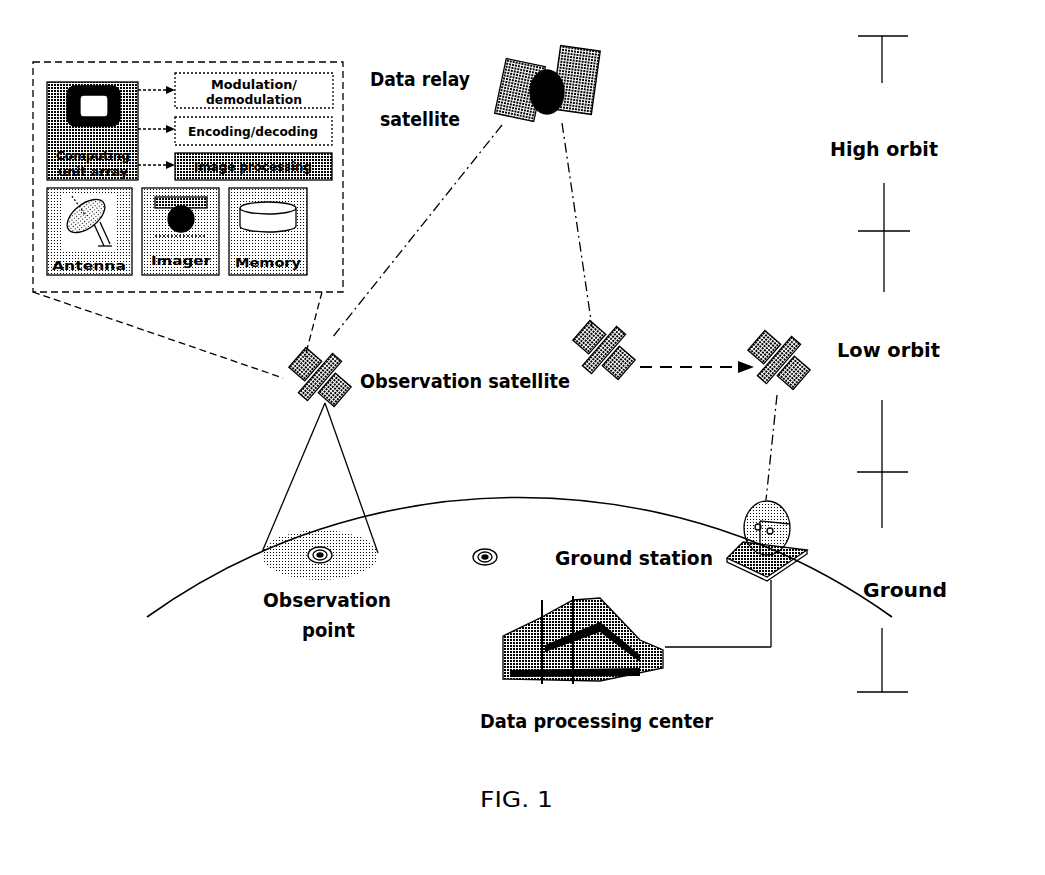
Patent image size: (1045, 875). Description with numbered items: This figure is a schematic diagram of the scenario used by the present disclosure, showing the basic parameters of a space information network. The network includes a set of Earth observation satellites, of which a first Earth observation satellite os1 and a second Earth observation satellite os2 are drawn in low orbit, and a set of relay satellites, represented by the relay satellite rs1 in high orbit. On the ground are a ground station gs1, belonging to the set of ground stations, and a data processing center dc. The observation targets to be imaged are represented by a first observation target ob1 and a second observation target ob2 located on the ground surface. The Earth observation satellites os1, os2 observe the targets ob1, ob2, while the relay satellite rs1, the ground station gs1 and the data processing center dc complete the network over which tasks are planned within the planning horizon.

The relay satellite rs1 is at (583, 84).
The Earth observation satellite os1 is at (340, 445).
The Earth observation satellite os2 is at (691, 365).
The ground station gs1 is at (736, 566).
The data processing center dc is at (608, 640).
The observation target ob1 is at (290, 555).
The observation target ob2 is at (505, 542).